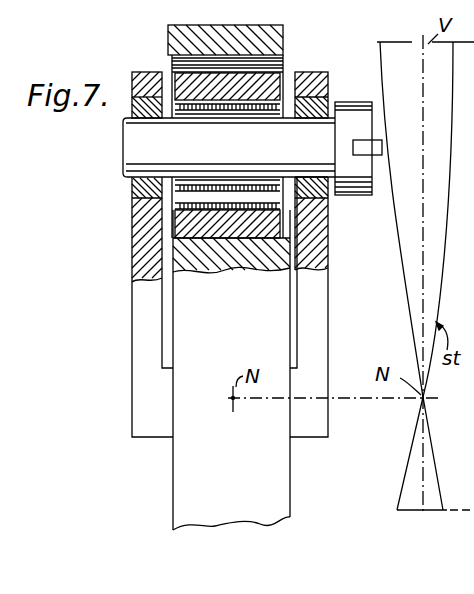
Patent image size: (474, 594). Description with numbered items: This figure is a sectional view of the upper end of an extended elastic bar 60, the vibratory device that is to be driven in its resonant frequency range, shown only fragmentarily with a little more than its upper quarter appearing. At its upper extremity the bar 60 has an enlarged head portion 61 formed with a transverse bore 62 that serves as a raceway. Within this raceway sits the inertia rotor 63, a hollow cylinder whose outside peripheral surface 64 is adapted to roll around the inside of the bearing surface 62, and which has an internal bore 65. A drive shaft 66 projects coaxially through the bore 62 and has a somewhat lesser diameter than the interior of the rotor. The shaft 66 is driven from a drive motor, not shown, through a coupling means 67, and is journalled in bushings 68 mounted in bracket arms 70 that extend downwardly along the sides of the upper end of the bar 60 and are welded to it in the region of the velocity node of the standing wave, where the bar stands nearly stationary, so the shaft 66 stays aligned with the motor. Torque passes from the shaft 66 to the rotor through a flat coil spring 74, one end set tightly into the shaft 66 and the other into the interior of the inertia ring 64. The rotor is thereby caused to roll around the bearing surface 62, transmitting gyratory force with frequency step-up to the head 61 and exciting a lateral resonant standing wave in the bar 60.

The elastic bar 60 is at (172, 478).
The enlarged head portion 61 is at (282, 36).
The transverse bore 62 is at (172, 60).
The inertia rotor 63 is at (283, 72).
The outside peripheral surface 64 is at (172, 63).
The internal bore 65 is at (225, 103).
The drive shaft 66 is at (160, 164).
The coupling means 67 is at (377, 157).
The bushings 68 is at (329, 100).
The bracket arms 70 is at (132, 324).
The flat coil spring 74 is at (217, 207).